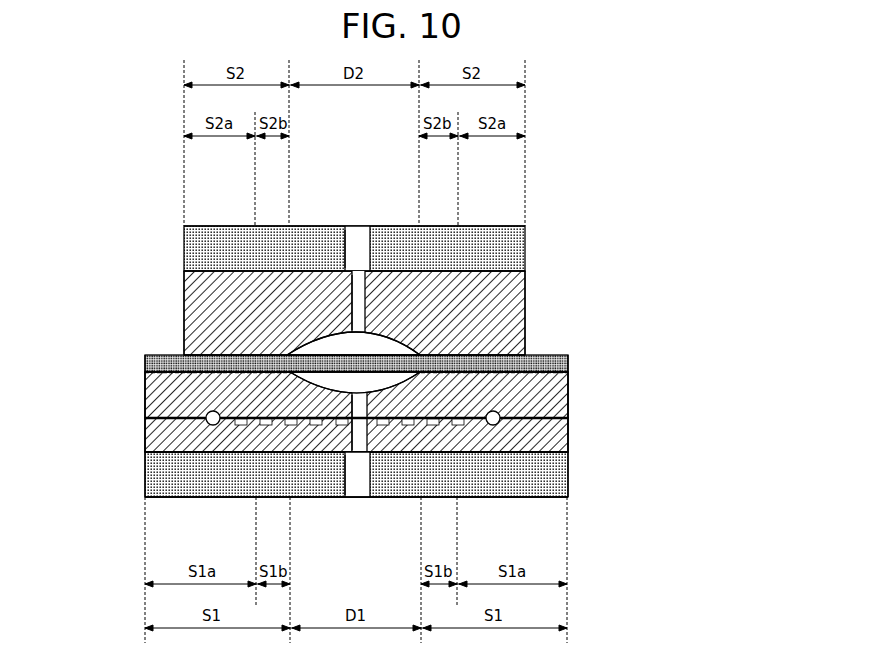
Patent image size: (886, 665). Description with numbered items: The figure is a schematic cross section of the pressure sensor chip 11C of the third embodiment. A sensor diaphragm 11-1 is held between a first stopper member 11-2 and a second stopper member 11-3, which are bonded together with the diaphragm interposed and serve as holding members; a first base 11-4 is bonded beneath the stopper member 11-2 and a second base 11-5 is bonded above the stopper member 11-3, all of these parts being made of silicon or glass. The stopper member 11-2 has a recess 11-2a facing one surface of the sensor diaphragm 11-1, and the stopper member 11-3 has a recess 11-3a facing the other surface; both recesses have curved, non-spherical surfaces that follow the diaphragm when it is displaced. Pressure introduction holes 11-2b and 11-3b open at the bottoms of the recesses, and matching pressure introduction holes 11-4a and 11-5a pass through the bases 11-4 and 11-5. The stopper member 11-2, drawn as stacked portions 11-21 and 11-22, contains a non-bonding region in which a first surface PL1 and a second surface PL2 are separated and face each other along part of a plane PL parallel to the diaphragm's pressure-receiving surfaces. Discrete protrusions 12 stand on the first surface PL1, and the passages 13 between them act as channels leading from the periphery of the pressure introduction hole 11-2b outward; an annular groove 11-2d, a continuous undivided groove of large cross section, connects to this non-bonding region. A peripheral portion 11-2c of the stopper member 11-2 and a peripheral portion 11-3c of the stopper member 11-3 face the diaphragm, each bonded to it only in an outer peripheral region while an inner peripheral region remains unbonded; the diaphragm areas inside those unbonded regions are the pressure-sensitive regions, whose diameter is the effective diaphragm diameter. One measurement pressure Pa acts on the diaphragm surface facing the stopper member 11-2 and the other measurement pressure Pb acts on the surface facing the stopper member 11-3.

The pressure sensor chip 11C is at (730, 192).
The second base 11-5 is at (528, 239).
The pressure introduction hole 11-5a is at (348, 242).
The second stopper member 11-3 is at (528, 296).
The recess 11-3a is at (386, 328).
The pressure introduction hole 11-3b is at (358, 318).
The peripheral portion 11-3c is at (220, 356).
The sensor diaphragm 11-1 is at (568, 368).
The first stopper member 11-2 is at (365, 435).
The upper block of lower die 11-21 is at (145, 392).
The lower block of lower die 11-22 is at (145, 440).
The recess 11-2a is at (385, 497).
The pressure introduction hole 11-2b is at (283, 498).
The peripheral portion 11-2c is at (145, 372).
The annular groove 11-2d is at (211, 426).
The first base 11-4 is at (568, 486).
The pressure introduction hole 11-4a is at (351, 483).
The protrusions 12 is at (568, 390).
The passages 13 is at (465, 498).
The plane PL is at (145, 418).
The first surface PL1 is at (180, 497).
The second surface PL2 is at (184, 355).
The measurement pressure Pa is at (357, 514).
The measurement pressure Pb is at (358, 214).